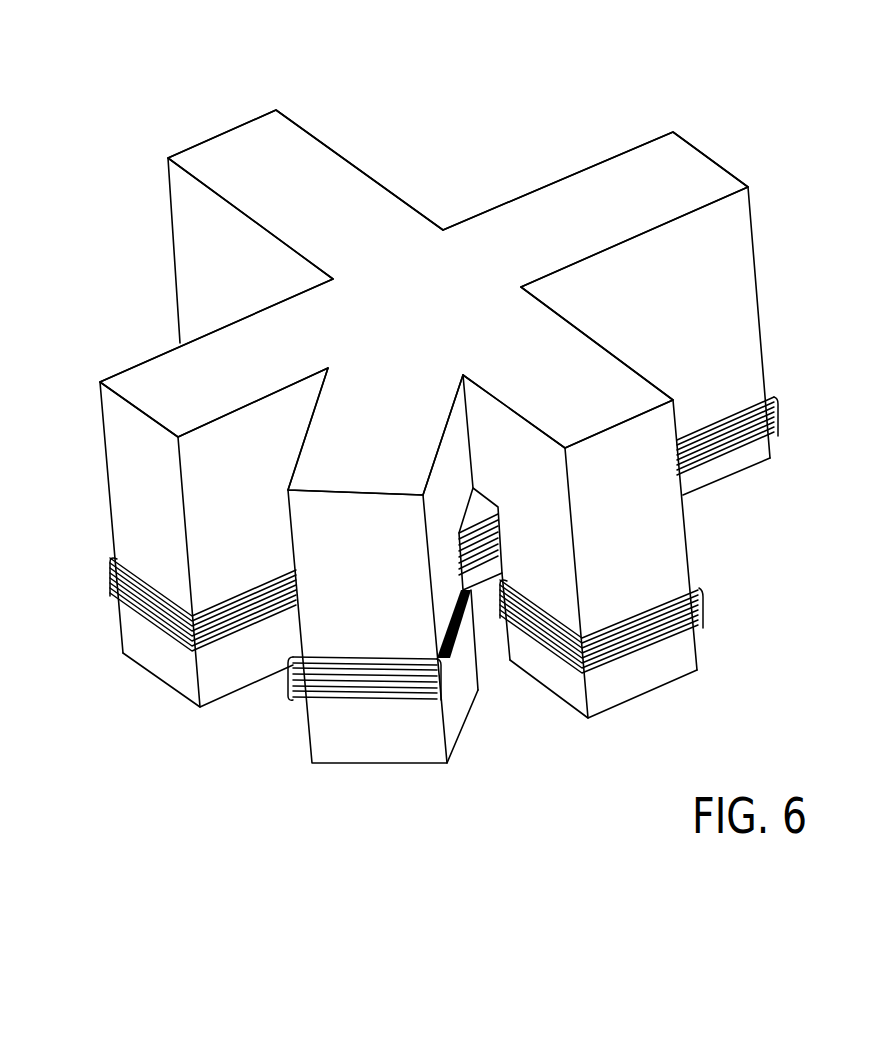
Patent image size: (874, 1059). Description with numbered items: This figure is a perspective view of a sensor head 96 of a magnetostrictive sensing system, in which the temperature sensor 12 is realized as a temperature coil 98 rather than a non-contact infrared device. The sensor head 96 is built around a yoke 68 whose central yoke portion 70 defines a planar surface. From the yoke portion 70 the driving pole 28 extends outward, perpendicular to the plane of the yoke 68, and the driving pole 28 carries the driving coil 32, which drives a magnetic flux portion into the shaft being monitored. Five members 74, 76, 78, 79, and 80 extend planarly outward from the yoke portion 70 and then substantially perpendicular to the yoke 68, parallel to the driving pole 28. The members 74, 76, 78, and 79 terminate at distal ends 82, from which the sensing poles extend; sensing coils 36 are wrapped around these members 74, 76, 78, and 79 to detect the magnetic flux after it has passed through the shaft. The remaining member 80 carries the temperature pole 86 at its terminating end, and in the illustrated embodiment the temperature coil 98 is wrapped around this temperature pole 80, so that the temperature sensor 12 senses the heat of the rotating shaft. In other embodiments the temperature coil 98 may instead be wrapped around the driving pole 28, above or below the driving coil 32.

The temperature sensor 12 is at (288, 707).
The driving pole 28 is at (477, 594).
The driving coil 32 is at (478, 533).
The sensing coils 36 is at (130, 593).
The yoke 68 is at (440, 257).
The yoke portion 70 is at (407, 296).
The member 74 is at (640, 397).
The member 76 is at (630, 170).
The member 78 is at (297, 142).
The member 79 is at (147, 377).
The member 80 is at (333, 467).
The distal ends 82 is at (140, 688).
The temperature pole 86 is at (297, 618).
The sensor head 96 is at (542, 52).
The temperature coil 98 is at (367, 692).